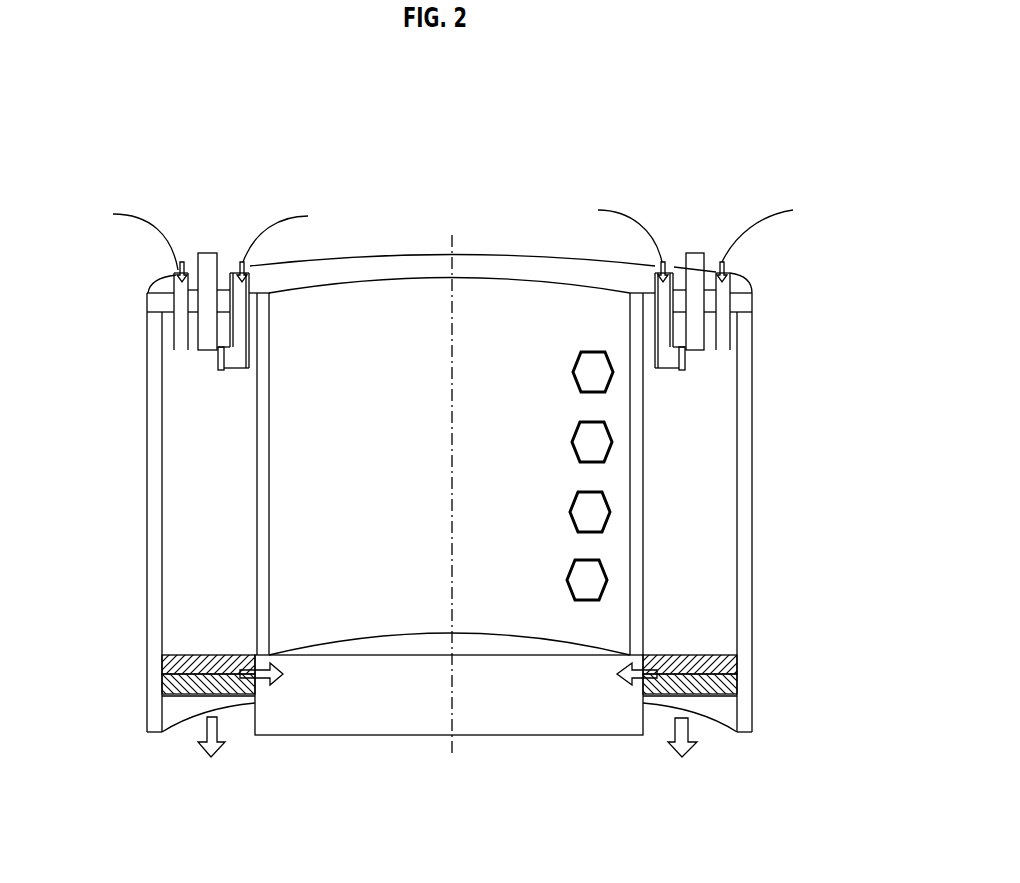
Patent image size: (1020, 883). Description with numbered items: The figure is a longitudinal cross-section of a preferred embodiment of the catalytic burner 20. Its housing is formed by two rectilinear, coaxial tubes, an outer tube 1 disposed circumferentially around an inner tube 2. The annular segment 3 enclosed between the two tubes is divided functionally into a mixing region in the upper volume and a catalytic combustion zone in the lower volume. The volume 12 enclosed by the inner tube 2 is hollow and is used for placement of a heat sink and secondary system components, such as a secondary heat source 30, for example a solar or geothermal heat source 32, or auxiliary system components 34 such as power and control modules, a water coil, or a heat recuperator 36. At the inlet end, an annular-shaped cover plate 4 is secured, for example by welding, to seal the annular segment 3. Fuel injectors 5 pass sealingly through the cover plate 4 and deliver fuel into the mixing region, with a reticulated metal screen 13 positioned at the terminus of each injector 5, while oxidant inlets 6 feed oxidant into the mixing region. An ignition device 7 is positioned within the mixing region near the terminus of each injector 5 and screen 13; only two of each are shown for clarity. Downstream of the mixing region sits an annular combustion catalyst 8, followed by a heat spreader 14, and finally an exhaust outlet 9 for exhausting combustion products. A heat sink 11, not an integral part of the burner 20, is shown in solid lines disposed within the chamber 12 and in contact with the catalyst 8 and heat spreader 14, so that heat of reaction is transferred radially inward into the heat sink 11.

The outer tube 1 is at (158, 440).
The inner tube 2 is at (265, 440).
The annular segment 3 is at (183, 533).
The cover plate 4 is at (165, 291).
The fuel injector 5 is at (238, 330).
The oxidant inlet 6 is at (176, 316).
The ignition device 7 is at (210, 253).
The combustion catalyst 8 is at (161, 660).
The exhaust outlet 9 is at (161, 715).
The heat sink 11 is at (305, 733).
The volume 12 is at (449, 467).
The reticulated metal screen 13 is at (218, 362).
The heat spreader 14 is at (161, 687).
The catalytic burner 20 is at (461, 525).
The secondary heat source 30 is at (600, 590).
The solar or geothermal heat source 32 is at (603, 522).
The auxiliary system components 34 is at (605, 452).
The heat recuperator 36 is at (605, 385).